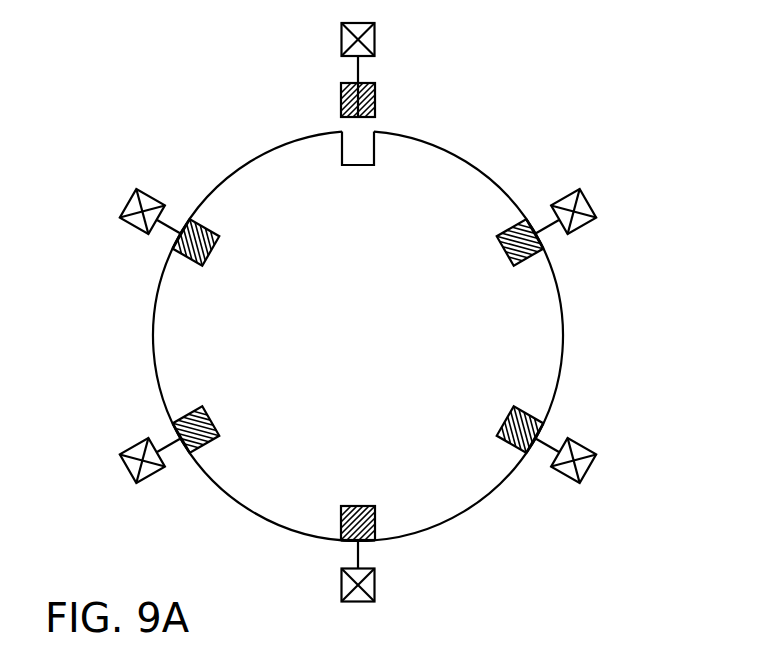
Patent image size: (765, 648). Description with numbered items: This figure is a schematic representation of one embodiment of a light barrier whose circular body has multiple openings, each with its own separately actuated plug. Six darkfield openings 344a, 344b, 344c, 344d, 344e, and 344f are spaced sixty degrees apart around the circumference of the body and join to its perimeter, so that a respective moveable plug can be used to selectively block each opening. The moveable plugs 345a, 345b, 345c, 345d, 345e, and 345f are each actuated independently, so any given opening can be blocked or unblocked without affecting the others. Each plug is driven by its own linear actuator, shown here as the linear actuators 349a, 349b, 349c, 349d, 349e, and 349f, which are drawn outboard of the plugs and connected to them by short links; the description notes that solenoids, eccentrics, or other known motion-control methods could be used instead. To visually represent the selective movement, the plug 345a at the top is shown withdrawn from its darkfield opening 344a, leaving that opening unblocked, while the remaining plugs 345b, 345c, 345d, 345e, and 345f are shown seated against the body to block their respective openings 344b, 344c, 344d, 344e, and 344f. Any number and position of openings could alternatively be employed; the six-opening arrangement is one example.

The darkfield opening 344a is at (358, 165).
The moveable plug 345a is at (345, 100).
The linear actuator 349a is at (345, 42).
The darkfield opening 344b is at (505, 252).
The moveable plug 345b is at (543, 245).
The linear actuator 349b is at (596, 205).
The darkfield opening 344c is at (503, 430).
The moveable plug 345c is at (543, 432).
The linear actuator 349c is at (588, 470).
The darkfield opening 344d is at (352, 505).
The moveable plug 345d is at (365, 542).
The linear actuator 349d is at (360, 602).
The darkfield opening 344e is at (213, 425).
The moveable plug 345e is at (177, 433).
The linear actuator 349e is at (155, 475).
The darkfield opening 344f is at (217, 248).
The moveable plug 345f is at (178, 240).
The linear actuator 349f is at (128, 215).